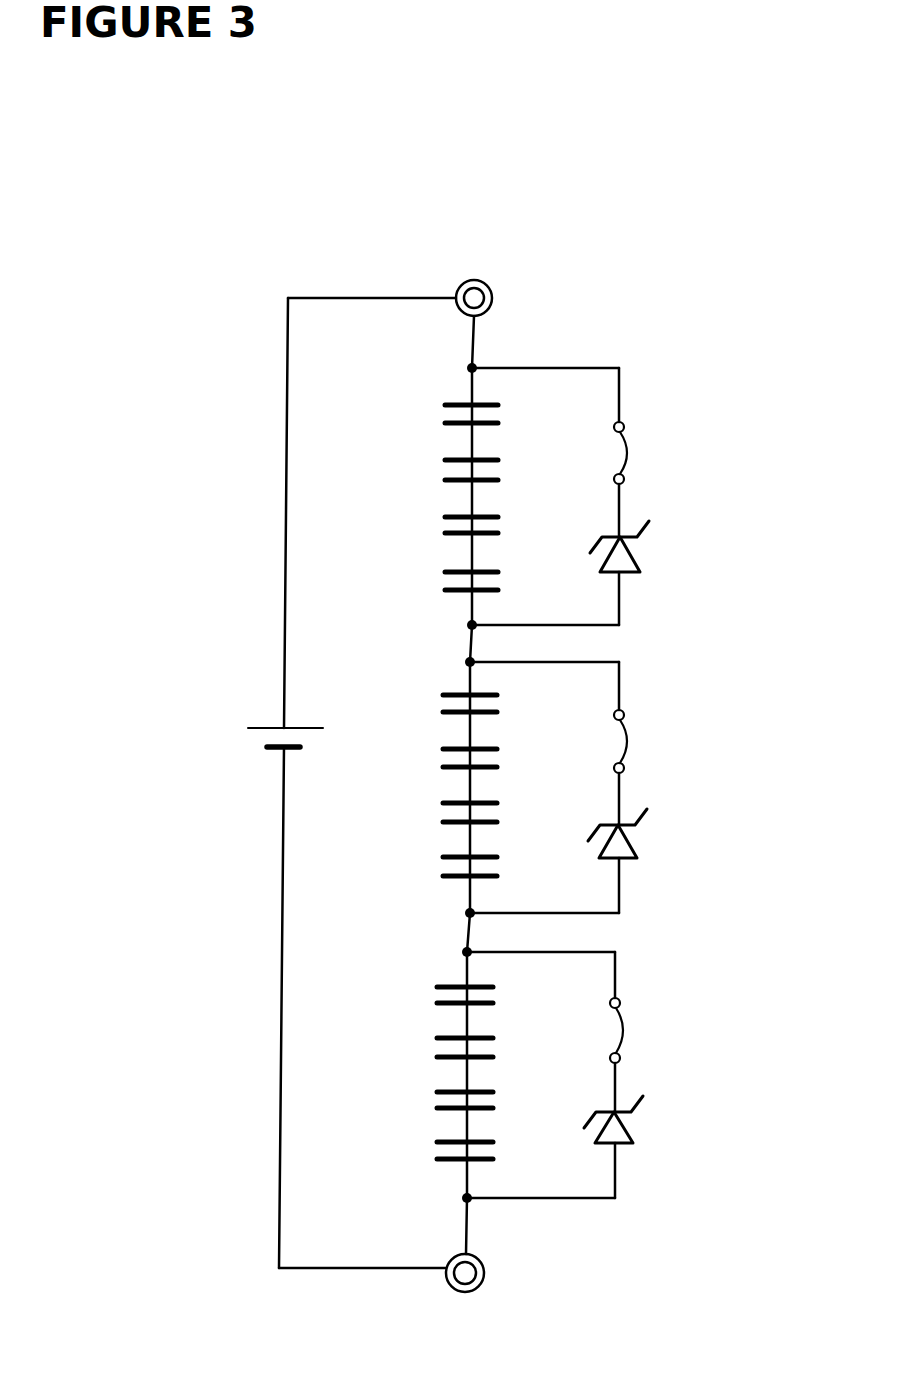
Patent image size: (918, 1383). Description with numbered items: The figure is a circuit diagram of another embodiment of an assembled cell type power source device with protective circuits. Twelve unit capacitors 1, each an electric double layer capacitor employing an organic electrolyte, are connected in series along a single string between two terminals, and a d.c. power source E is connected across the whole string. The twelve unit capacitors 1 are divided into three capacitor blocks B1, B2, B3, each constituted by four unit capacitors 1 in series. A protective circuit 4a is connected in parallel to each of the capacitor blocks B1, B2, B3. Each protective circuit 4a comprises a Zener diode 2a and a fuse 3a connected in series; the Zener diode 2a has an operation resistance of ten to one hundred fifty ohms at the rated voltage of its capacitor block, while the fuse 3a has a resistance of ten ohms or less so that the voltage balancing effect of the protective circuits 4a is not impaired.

The unit capacitor 1 is at (388, 1168).
The Zener diode 2a is at (632, 553).
The fuse 3a is at (627, 450).
The protective circuit 4a is at (757, 422).
The capacitor block B1 is at (390, 405).
The capacitor block B2 is at (387, 672).
The capacitor block B3 is at (384, 963).
The d.c. power source E is at (257, 743).